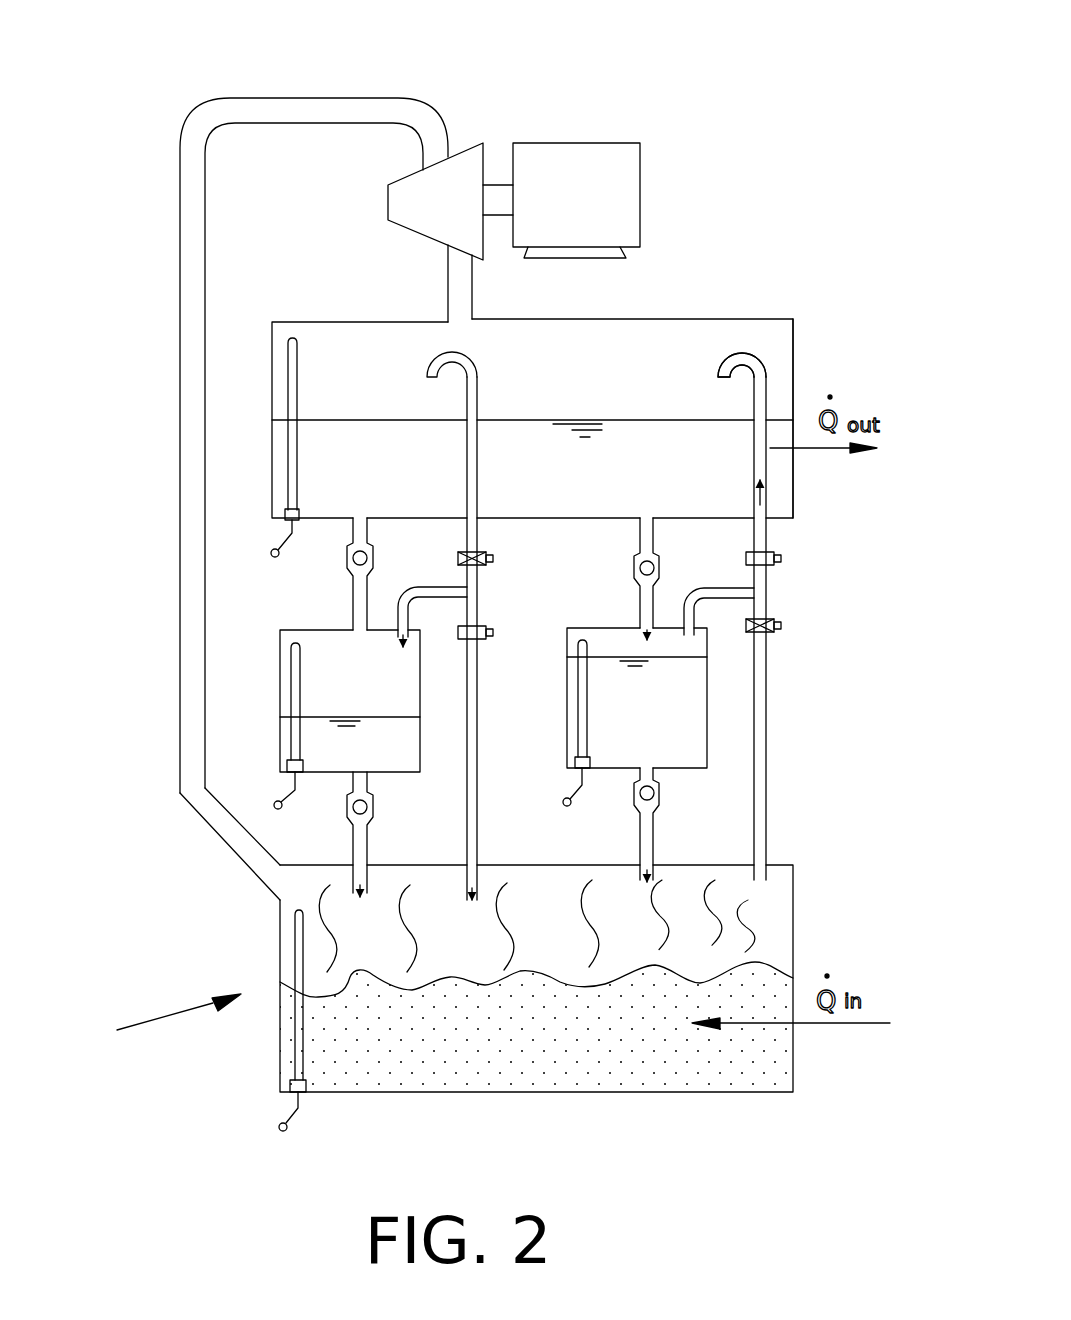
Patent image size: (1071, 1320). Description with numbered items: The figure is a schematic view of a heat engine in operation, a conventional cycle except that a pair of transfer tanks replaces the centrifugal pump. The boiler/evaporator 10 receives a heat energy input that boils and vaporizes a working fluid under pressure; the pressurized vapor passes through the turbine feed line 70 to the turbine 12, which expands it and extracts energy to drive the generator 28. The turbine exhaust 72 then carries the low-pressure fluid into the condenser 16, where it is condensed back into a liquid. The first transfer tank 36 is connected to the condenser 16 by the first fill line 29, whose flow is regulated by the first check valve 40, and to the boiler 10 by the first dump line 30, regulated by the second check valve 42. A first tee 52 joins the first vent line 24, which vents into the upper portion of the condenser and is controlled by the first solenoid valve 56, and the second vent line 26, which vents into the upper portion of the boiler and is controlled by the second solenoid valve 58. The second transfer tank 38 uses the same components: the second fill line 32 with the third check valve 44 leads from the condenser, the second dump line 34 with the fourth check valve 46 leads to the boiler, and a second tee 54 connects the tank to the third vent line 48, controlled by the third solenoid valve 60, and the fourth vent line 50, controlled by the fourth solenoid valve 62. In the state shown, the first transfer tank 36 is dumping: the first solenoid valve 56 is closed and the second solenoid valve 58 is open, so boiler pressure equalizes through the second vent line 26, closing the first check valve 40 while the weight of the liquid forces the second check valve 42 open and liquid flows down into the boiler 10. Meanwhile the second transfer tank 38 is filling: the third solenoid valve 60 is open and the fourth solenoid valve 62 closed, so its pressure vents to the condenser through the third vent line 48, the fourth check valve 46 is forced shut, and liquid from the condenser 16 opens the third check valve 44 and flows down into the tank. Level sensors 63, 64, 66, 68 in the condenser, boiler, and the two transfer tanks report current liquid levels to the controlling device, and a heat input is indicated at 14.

The boiler/evaporator 10 is at (773, 858).
The turbine 12 is at (466, 160).
The heat input 14 is at (117, 1030).
The condenser 16 is at (793, 373).
The first vent line 24 is at (473, 373).
The second vent line 26 is at (477, 843).
The generator 28 is at (580, 183).
The first fill line 29 is at (353, 545).
The first dump line 30 is at (352, 847).
The second fill line 32 is at (640, 538).
The second dump line 34 is at (657, 835).
The first transfer tank 36 is at (280, 630).
The second transfer tank 38 is at (605, 626).
The first check valve 40 is at (356, 558).
The second check valve 42 is at (350, 803).
The third check valve 44 is at (655, 557).
The fourth check valve 46 is at (657, 792).
The third vent line 48 is at (763, 370).
The fourth vent line 50 is at (763, 738).
The first tee 52 is at (478, 595).
The second tee 54 is at (768, 593).
The first solenoid valve 56 is at (486, 553).
The second solenoid valve 58 is at (486, 637).
The third solenoid valve 60 is at (774, 558).
The fourth solenoid valve 62 is at (774, 617).
The level sensor 63 is at (288, 480).
The level sensor 64 is at (293, 1020).
The level sensor 66 is at (291, 700).
The level sensor 68 is at (578, 690).
The turbine feed line 70 is at (193, 792).
The turbine exhaust 72 is at (462, 300).